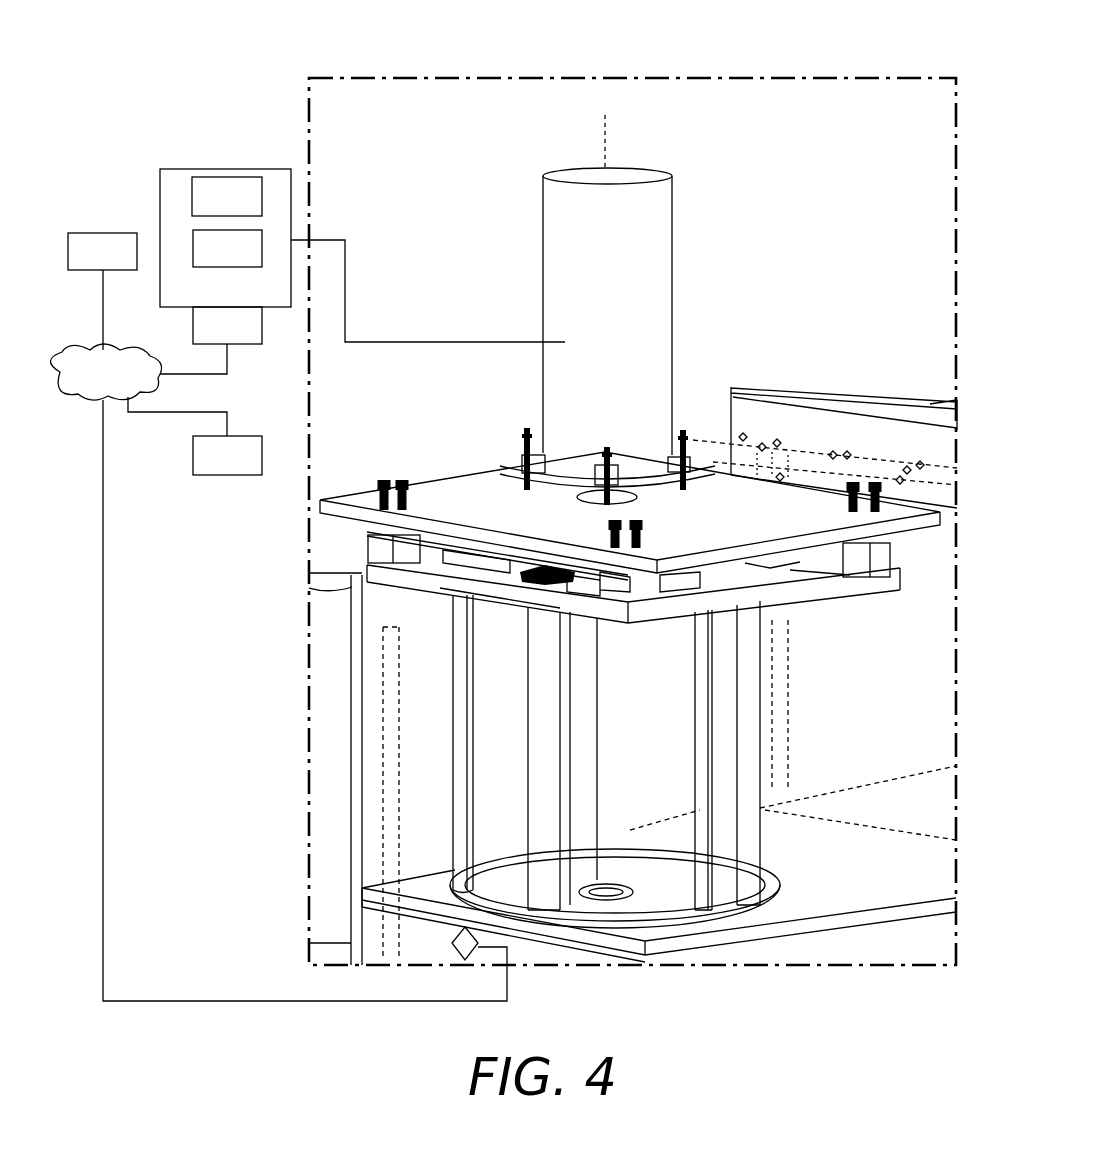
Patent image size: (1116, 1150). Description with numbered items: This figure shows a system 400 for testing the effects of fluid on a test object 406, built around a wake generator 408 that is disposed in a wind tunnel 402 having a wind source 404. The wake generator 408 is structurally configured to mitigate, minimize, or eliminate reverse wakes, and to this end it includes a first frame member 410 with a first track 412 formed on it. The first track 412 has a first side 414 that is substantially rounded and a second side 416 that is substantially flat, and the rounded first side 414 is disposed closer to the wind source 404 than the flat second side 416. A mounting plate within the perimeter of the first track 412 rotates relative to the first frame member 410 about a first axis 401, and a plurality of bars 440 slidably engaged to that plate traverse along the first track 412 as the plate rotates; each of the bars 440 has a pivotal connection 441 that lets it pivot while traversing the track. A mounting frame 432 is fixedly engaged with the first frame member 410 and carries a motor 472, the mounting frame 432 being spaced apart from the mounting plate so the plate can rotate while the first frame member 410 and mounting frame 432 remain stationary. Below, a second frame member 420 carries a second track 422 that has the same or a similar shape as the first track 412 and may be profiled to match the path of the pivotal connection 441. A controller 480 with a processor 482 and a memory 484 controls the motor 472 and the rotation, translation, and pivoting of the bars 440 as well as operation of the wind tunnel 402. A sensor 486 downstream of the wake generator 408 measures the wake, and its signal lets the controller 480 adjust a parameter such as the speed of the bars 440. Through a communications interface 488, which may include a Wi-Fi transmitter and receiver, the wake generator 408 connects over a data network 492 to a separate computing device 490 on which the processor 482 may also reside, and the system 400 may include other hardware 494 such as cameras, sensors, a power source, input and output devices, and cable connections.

The system 400 is at (875, 49).
The first axis 401 is at (603, 140).
The wind tunnel 402 is at (703, 387).
The wind source 404 is at (939, 670).
The test object 406 is at (318, 697).
The wake generator 408 is at (443, 309).
The first frame member 410 is at (367, 573).
The first track 412 is at (777, 565).
The first side 414 is at (782, 565).
The second side 416 is at (470, 574).
The second frame member 420 is at (862, 896).
The second track 422 is at (745, 872).
The mounting frame 432 is at (495, 497).
The plurality of bars 440 is at (760, 748).
The pivotal connection 441 is at (458, 558).
The motor 472 is at (556, 250).
The controller 480 is at (249, 303).
The processor 482 is at (249, 213).
The memory 484 is at (249, 265).
The sensor 486 is at (450, 945).
The communications interface 488 is at (249, 342).
The separate computing device 490 is at (249, 472).
The data network 492 is at (125, 390).
The other hardware 494 is at (125, 268).